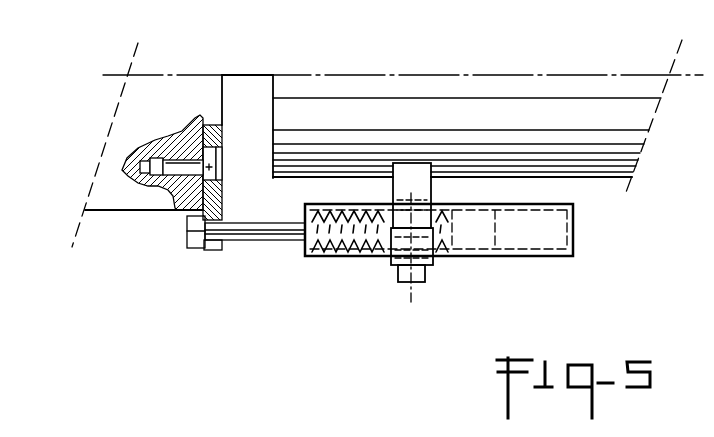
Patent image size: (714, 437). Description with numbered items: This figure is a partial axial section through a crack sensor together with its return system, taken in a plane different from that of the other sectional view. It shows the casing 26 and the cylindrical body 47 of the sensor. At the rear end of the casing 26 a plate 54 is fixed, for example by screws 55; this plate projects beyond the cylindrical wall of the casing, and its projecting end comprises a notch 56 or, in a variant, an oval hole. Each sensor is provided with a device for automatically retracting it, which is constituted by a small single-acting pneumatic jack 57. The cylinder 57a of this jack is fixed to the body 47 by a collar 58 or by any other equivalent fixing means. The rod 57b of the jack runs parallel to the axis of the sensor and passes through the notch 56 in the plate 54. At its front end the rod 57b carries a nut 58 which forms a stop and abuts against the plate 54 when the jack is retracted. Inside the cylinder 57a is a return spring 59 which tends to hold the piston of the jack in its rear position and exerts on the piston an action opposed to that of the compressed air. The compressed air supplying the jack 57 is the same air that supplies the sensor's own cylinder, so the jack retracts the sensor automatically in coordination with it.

The casing 26 is at (108, 197).
The cylindrical body 47 is at (316, 95).
The plate 54 is at (218, 201).
The screws 55 is at (178, 166).
The notch 56 is at (213, 248).
The single-acting pneumatic jack 57 is at (471, 272).
The cylinder 57a is at (530, 235).
The rod 57b is at (257, 238).
The collar 58 is at (409, 175).
The return spring 59 is at (340, 255).